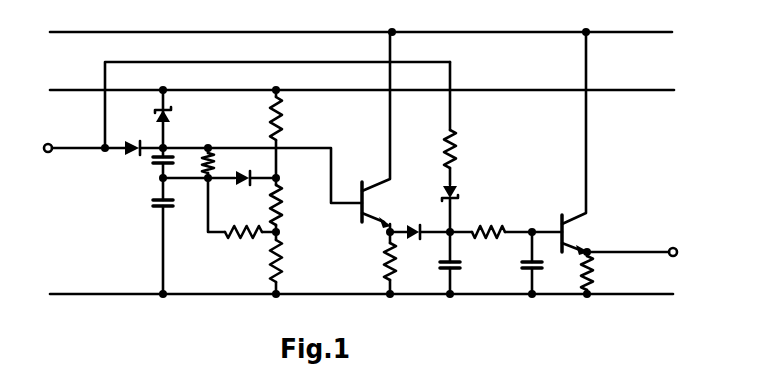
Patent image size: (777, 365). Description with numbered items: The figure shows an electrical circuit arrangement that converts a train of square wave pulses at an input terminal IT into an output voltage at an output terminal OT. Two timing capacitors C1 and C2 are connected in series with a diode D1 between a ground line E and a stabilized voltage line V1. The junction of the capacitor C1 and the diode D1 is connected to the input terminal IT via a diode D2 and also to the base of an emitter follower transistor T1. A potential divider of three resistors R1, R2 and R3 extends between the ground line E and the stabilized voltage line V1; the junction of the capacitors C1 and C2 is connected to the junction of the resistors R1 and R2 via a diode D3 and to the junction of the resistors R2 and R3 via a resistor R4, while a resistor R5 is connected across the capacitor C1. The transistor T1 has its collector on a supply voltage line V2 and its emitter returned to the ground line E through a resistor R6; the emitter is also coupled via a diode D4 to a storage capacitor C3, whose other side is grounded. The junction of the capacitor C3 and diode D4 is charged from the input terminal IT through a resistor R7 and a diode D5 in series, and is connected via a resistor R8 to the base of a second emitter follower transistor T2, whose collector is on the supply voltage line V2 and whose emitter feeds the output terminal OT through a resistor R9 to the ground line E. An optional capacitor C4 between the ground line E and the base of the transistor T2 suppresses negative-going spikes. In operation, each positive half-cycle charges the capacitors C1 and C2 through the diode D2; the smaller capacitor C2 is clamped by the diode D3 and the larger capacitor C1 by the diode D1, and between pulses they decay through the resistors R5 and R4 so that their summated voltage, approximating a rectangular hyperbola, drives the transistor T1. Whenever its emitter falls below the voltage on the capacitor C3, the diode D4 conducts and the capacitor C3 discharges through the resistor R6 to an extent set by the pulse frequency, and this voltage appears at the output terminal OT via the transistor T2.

The supply voltage line V2 is at (364, 183).
The stabilized voltage line V1 is at (362, 76).
The ground line E is at (632, 296).
The input terminal IT is at (247, 132).
The output terminal OT is at (633, 237).
The diode D1 is at (168, 112).
The diode D2 is at (131, 142).
The diode D3 is at (243, 183).
The diode D4 is at (417, 240).
The diode D5 is at (457, 190).
The timing capacitor C1 is at (157, 164).
The timing capacitor C2 is at (156, 203).
The storage capacitor C3 is at (461, 264).
The capacitor C4 is at (524, 270).
The resistor R1 is at (283, 130).
The resistor R2 is at (295, 220).
The resistor R3 is at (283, 272).
The resistor R4 is at (246, 240).
The resistor R5 is at (214, 160).
The resistor R6 is at (384, 255).
The resistor R7 is at (474, 155).
The resistor R8 is at (488, 225).
The resistor R9 is at (594, 286).
The emitter follower transistor T1 is at (368, 203).
The second emitter follower transistor T2 is at (568, 232).